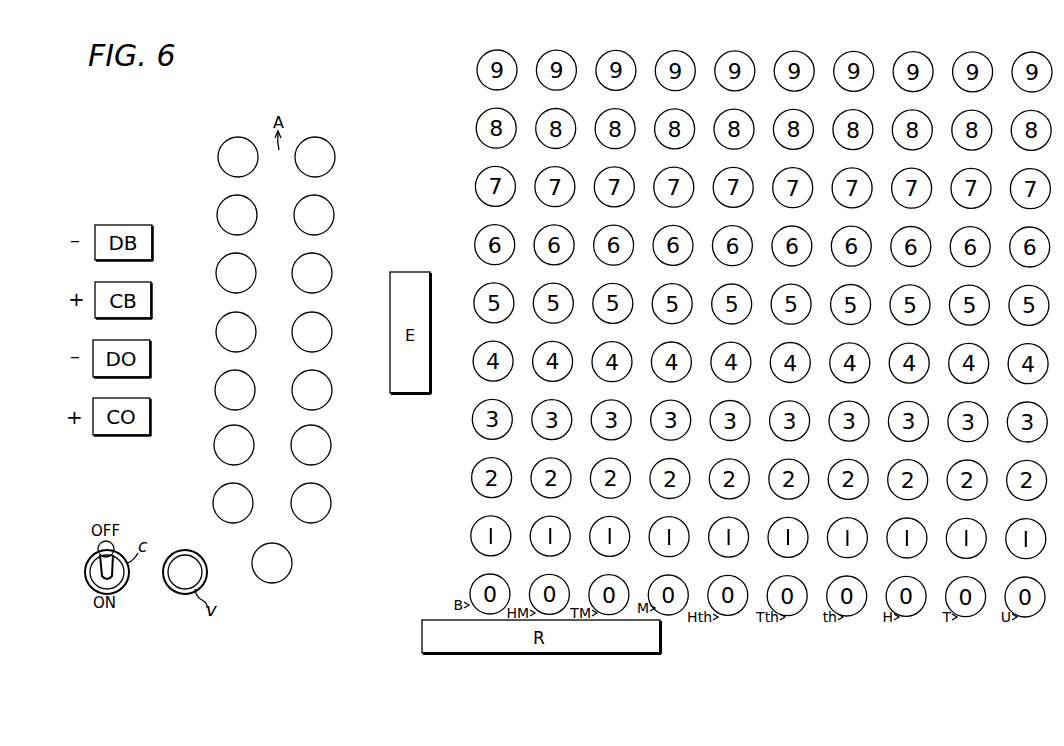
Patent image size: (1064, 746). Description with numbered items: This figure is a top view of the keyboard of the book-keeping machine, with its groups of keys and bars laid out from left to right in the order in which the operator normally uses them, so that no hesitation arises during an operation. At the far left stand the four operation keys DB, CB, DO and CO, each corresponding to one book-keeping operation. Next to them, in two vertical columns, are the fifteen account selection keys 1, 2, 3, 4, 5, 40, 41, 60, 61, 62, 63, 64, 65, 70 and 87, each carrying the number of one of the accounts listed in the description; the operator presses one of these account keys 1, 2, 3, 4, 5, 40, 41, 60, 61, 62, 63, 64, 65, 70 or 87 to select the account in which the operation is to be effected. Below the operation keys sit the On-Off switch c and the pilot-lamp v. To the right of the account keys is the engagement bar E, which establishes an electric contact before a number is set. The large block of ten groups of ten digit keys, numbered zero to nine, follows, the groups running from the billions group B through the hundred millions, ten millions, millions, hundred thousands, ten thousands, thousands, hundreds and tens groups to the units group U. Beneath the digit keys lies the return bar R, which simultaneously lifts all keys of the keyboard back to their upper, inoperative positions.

The account selection key 1 is at (238, 165).
The account selection key 2 is at (315, 157).
The account selection key 3 is at (237, 215).
The account selection key 4 is at (314, 215).
The account selection key 5 is at (236, 273).
The account selection key 40 is at (312, 273).
The account selection key 41 is at (236, 332).
The account selection key 60 is at (312, 332).
The account selection key 61 is at (235, 390).
The account selection key 62 is at (312, 390).
The account selection key 63 is at (234, 445).
The account selection key 64 is at (311, 445).
The account selection key 65 is at (233, 503).
The account selection key 70 is at (311, 503).
The account selection key 87 is at (272, 563).